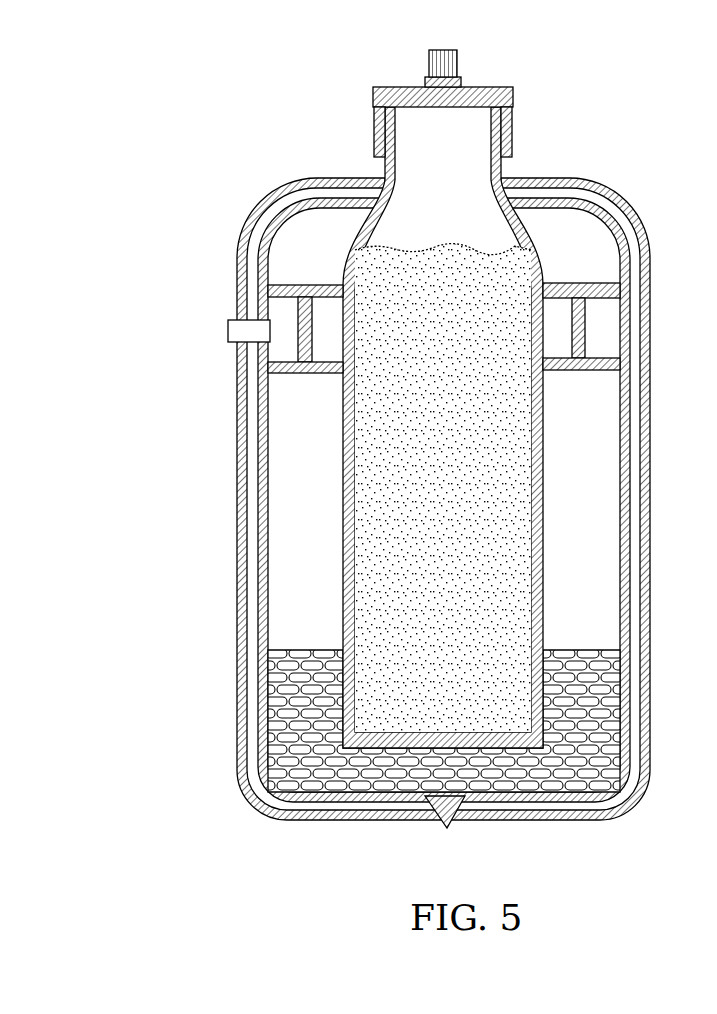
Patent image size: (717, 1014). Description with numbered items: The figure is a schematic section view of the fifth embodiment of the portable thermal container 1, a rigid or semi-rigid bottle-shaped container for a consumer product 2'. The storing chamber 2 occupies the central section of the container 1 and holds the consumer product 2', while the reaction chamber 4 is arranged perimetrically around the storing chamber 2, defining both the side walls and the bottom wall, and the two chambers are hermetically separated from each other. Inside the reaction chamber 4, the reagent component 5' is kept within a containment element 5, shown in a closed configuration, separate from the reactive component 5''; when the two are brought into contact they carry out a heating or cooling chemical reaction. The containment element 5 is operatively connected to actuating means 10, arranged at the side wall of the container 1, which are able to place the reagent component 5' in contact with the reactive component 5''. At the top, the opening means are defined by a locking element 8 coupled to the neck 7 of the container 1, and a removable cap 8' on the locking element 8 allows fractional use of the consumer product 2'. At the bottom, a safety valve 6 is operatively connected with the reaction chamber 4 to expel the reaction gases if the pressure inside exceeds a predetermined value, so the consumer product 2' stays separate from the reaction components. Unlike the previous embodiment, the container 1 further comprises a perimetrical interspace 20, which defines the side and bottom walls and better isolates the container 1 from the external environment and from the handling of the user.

The portable thermal container 1 is at (262, 192).
The storing chamber 2 is at (371, 413).
The consumer product 2' is at (371, 427).
The reaction chamber 4 is at (325, 435).
The containment element 5 is at (414, 500).
The reagent component 5' is at (444, 328).
The reactive component 5'' is at (478, 721).
The safety valve 6 is at (463, 800).
The neck 7 is at (377, 125).
The locking element 8 is at (445, 47).
The removable cap 8' is at (427, 42).
The actuating means 10 is at (232, 330).
The perimetrical interspace 20 is at (638, 490).